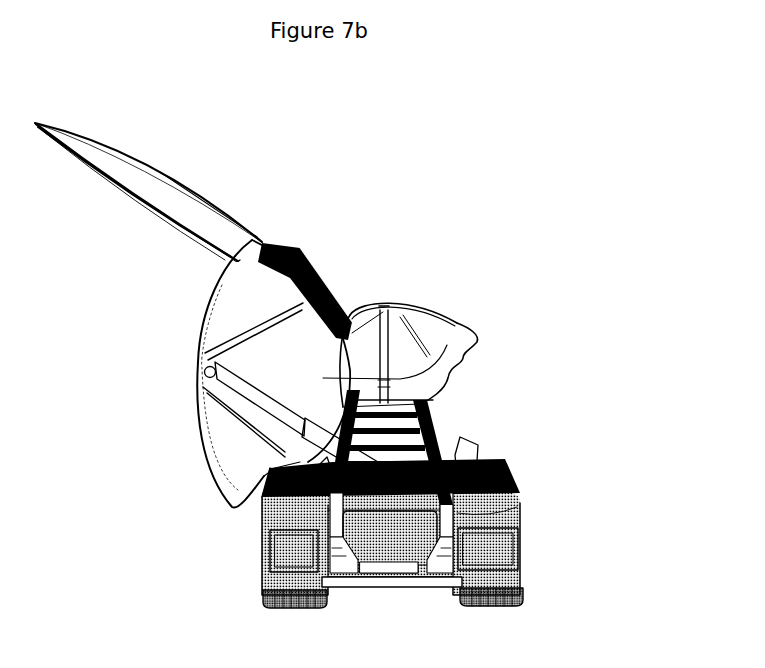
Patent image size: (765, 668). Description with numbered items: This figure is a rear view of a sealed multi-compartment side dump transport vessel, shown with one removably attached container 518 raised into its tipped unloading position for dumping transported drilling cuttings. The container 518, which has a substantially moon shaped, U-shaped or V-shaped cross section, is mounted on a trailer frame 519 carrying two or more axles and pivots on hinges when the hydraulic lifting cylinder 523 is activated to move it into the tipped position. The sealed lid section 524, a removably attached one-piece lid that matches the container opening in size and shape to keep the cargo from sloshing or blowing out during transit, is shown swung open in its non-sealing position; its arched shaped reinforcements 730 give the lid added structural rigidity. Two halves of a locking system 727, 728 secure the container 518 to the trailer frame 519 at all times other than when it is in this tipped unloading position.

The arched shaped reinforcements 730 is at (80, 128).
The sealed lid section 524 is at (130, 183).
The hydraulic lifting cylinder 523 is at (268, 405).
The locking system half 727 is at (385, 311).
The container 518 is at (443, 320).
The locking system half 728 is at (460, 440).
The frame 519 is at (522, 493).